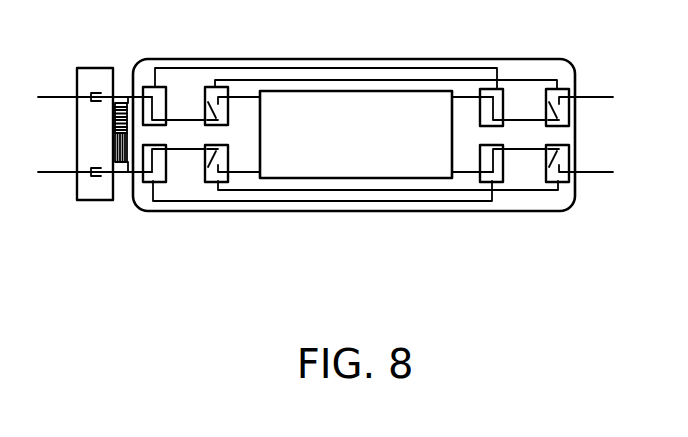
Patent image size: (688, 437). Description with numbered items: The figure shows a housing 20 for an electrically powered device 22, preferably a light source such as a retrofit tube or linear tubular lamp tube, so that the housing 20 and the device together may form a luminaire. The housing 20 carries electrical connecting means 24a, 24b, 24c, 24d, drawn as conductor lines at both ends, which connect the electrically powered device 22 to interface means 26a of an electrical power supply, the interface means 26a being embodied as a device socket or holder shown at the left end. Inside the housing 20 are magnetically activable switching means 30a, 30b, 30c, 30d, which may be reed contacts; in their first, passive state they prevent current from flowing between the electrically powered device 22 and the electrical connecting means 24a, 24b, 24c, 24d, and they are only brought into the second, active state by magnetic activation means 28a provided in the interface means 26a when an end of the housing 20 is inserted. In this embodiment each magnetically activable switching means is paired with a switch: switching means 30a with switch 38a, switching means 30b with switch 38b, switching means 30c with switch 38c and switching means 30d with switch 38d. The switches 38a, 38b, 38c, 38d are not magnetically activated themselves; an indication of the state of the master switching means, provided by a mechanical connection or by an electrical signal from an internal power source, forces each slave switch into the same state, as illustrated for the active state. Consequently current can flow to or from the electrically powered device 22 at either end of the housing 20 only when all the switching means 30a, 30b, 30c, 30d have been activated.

The housing 20 is at (363, 68).
The electrically powered device 22 is at (364, 192).
The electrical connecting means 24a is at (128, 97).
The electrical connecting means 24b is at (128, 172).
The electrical connecting means 24c is at (597, 97).
The electrical connecting means 24d is at (600, 172).
The interface means 26a is at (90, 67).
The magnetic activation means 28a is at (115, 129).
The magnetically activable switching means 30a is at (160, 86).
The magnetically activable switching means 30b is at (158, 183).
The magnetically activable switching means 30c is at (550, 88).
The magnetically activable switching means 30d is at (562, 183).
The switch 38a is at (212, 86).
The switch 38b is at (490, 183).
The switch 38c is at (496, 88).
The switch 38d is at (220, 183).